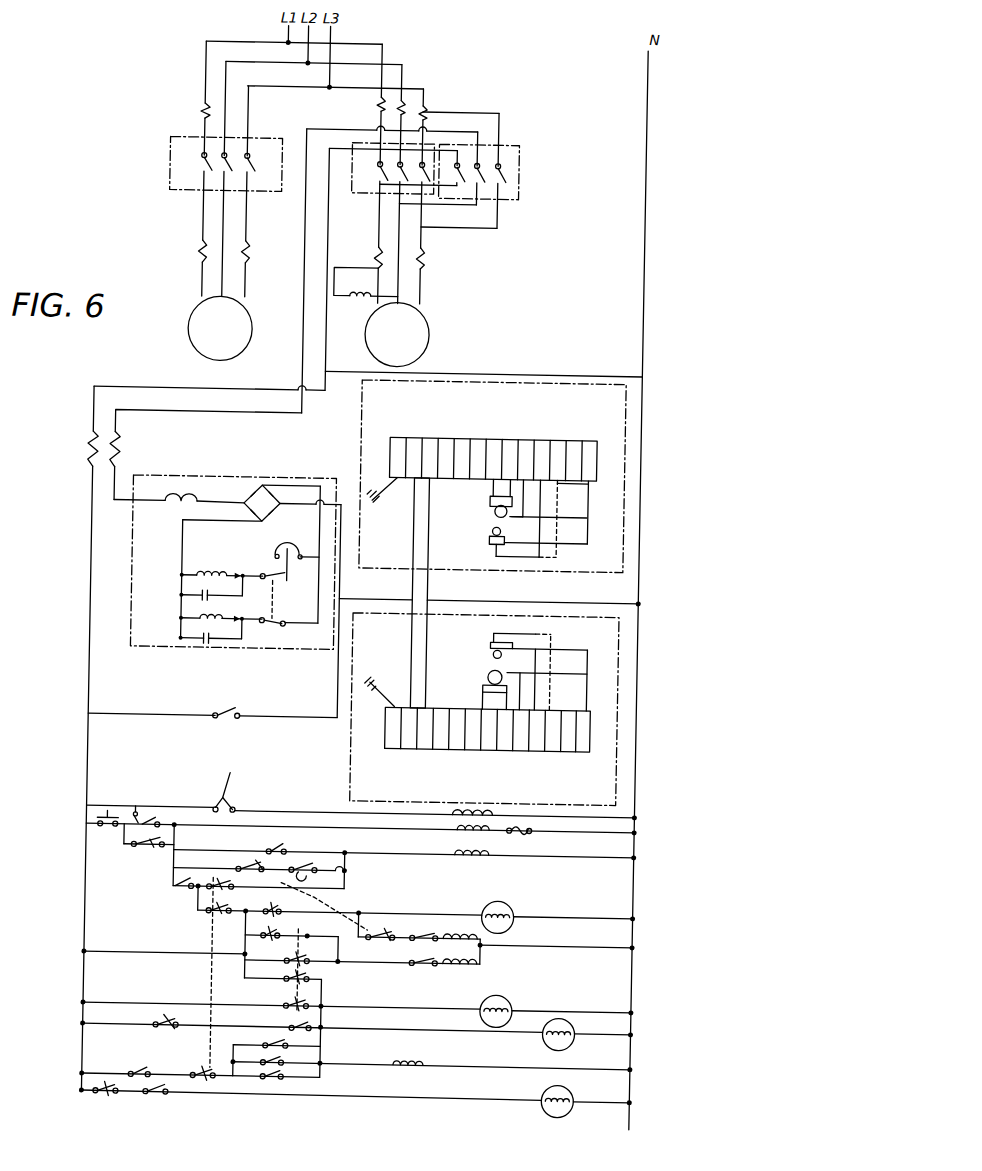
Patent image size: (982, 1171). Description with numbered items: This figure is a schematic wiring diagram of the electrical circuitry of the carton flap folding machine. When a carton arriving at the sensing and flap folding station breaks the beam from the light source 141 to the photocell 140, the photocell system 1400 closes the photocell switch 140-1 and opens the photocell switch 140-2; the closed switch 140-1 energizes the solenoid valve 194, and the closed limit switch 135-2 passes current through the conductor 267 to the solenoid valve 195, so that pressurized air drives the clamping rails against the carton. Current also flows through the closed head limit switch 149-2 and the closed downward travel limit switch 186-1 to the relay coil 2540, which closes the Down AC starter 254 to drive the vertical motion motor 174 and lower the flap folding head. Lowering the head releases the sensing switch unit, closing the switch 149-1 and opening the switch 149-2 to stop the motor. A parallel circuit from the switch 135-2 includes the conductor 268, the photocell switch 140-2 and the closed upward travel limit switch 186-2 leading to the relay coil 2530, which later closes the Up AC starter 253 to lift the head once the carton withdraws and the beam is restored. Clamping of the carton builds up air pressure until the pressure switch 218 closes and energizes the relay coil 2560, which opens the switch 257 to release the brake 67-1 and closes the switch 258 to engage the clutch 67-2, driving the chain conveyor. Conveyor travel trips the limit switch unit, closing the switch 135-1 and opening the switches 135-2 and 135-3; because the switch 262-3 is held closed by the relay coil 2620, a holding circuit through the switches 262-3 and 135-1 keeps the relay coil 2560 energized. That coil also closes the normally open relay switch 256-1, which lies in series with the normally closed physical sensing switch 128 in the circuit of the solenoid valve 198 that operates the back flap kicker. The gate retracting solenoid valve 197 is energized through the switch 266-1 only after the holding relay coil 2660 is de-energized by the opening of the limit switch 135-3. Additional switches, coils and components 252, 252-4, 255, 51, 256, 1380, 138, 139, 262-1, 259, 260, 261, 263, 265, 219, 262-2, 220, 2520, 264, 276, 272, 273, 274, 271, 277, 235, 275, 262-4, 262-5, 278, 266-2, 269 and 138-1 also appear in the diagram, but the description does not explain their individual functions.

The main drive motor contactor 252 is at (158, 194).
The Up AC starter 253 is at (342, 198).
The Down AC starter 254 is at (503, 199).
The feed motor winding coil 255 is at (352, 286).
The drive motor 51 is at (218, 339).
The vertical motion motor 174 is at (400, 342).
The clutch and brake control circuit 256 is at (184, 474).
The clutch 67-2 is at (184, 572).
The brake 67-1 is at (186, 617).
The magnetic clutch circuit switch 258 is at (272, 584).
The magnetic brake circuit switch 257 is at (270, 629).
The upper heater assembly 1380 is at (618, 460).
The upper heater lamp 138 is at (482, 512).
The upper heater lamp 139 is at (482, 541).
The photocell system 1400 is at (616, 674).
The light source 141 is at (485, 644).
The photocell 140 is at (483, 675).
The relay contact 262-1 is at (226, 713).
The selector switch 259 is at (228, 774).
The random position contact 260 is at (210, 805).
The uniform position contact 261 is at (242, 791).
The start switch contact 263 is at (134, 808).
The holding contact 265 is at (130, 850).
The contactor auxiliary contact 252-4 is at (162, 851).
The switch 262-3 is at (184, 887).
The contact 219 is at (257, 843).
The relay contact 262-2 is at (283, 848).
The sensing switch 149-1 is at (240, 868).
The limit switch 135-1 is at (210, 878).
The pressure switch 218 is at (303, 860).
The junction 220 is at (345, 873).
The relay coil 2620 is at (495, 812).
The contactor coil 2520 is at (452, 830).
The overload contact 264 is at (516, 833).
The relay coil 2560 is at (458, 855).
The photocell switch 140-1 is at (268, 910).
The photocell switch 140-2 is at (324, 907).
The limit switch 135-2 is at (206, 916).
The downward travel limit switch 186-1 is at (436, 934).
The relay coil 2540 is at (458, 933).
The solenoid valve 194 is at (510, 903).
The conductor 276 is at (145, 954).
The conductor 268 is at (243, 936).
The relay contact 272 is at (290, 934).
The relay contact 273 is at (292, 958).
The relay contact 274 is at (292, 977).
The head limit switch 149-2 is at (390, 940).
The relay 271 is at (318, 972).
The relay coil 2530 is at (450, 966).
The upward travel limit switch 186-2 is at (430, 965).
The conductor 277 is at (176, 1003).
The conductor 267 is at (266, 979).
The solenoid valve 195 is at (510, 997).
The switch contact 235 is at (166, 1020).
The relay contact 275 is at (286, 1009).
The relay contact 262-4 is at (312, 1024).
The gate retracting solenoid valve 197 is at (574, 1028).
The relay contact 262-5 is at (142, 1070).
The conductor 278 is at (230, 1027).
The switch 266-1 is at (290, 1044).
The relay contact 266-2 is at (288, 1070).
The holding relay coil 2660 is at (423, 1070).
The solenoid valve 198 is at (574, 1097).
The physical sensing switch 128 is at (110, 1098).
The relay switch 256-1 is at (164, 1098).
The conductor 269 is at (228, 1080).
The limit switch 135-3 is at (210, 1084).
The switch contact 138-1 is at (274, 1082).